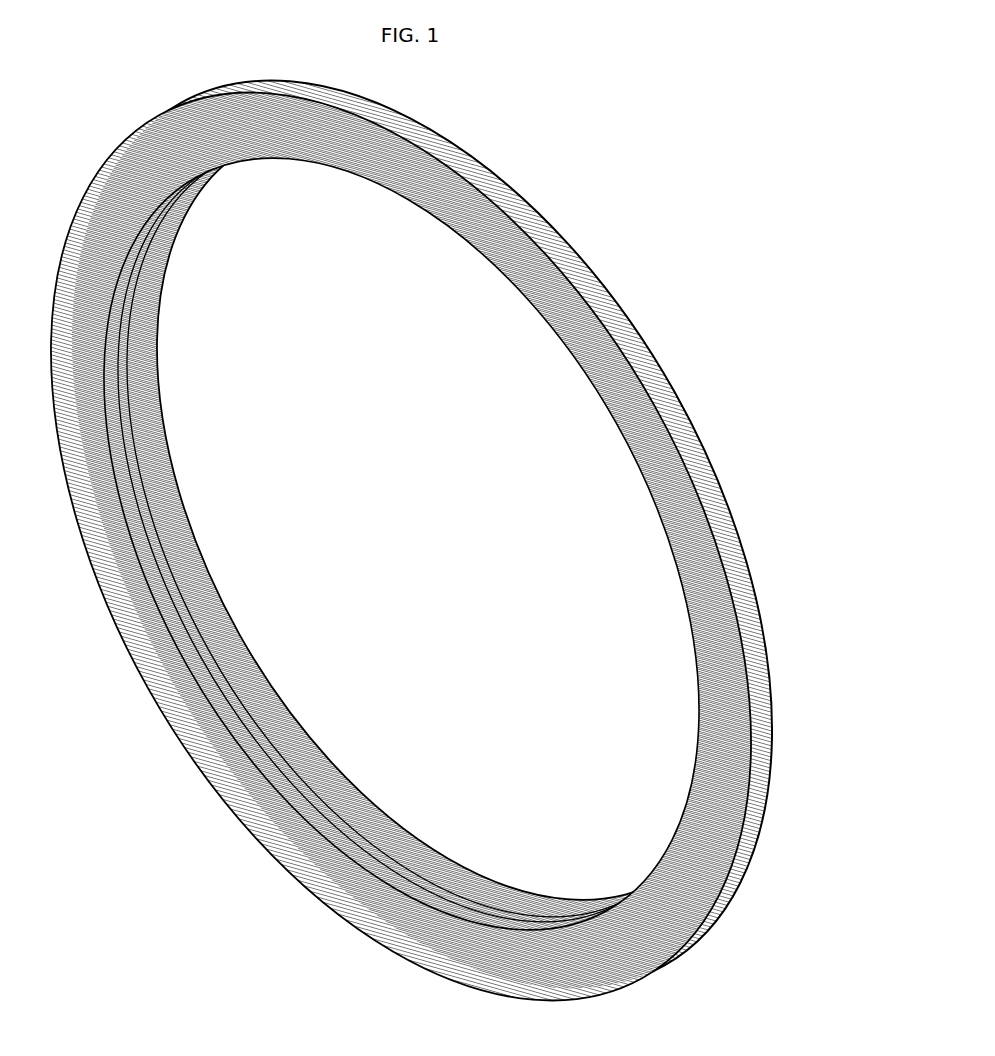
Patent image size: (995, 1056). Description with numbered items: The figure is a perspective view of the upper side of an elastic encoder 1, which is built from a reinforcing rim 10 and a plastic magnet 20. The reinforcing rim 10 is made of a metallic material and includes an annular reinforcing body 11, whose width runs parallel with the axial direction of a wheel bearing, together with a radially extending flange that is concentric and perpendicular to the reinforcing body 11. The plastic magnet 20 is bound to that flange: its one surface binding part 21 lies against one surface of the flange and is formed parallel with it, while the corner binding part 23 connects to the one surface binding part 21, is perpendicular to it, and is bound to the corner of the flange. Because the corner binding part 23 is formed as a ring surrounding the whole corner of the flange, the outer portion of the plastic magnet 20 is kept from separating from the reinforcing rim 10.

The elastic encoder 1 is at (626, 102).
The reinforcing rim 10 is at (303, 755).
The reinforcing body 11 is at (267, 717).
The plastic magnet 20 is at (228, 800).
The one surface binding part 21 is at (187, 717).
The corner binding part 23 is at (610, 300).